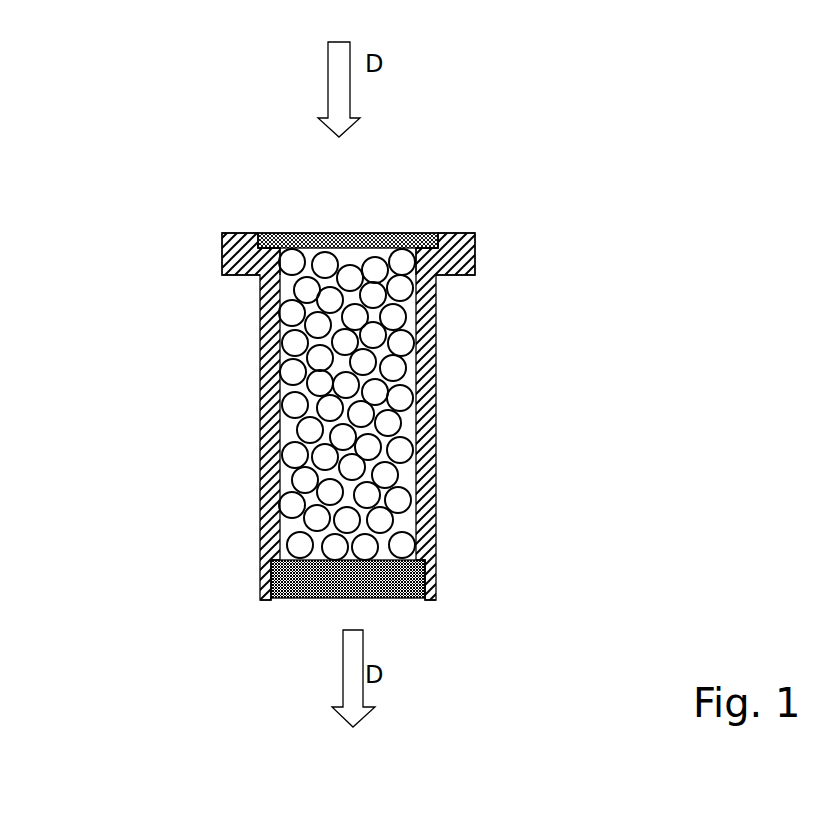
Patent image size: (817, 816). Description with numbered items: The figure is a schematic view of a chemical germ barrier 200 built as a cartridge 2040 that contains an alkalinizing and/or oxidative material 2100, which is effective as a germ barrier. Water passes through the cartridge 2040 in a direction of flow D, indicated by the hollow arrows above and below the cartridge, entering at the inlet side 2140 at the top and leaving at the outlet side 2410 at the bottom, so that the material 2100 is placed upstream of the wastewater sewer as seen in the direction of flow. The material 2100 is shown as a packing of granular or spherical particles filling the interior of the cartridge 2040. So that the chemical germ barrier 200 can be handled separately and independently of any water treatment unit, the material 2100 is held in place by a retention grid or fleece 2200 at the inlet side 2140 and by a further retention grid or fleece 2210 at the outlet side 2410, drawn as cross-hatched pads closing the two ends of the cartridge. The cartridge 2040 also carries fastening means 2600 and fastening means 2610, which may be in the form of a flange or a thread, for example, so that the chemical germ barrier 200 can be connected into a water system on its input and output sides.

The chemical germ barrier 200 is at (122, 338).
The cartridge 2040 is at (443, 367).
The alkalinizing and/or oxidative material 2100 is at (277, 433).
The inlet side of cartridge 2140 is at (353, 227).
The retention grid, fleece 2200 is at (402, 233).
The retention grid, fleece 2210 is at (262, 570).
The outlet side of cartridge 2410 is at (372, 585).
The fastening means, flange, thread 2600 is at (445, 588).
The fastening means, flange, thread 2610 is at (485, 245).